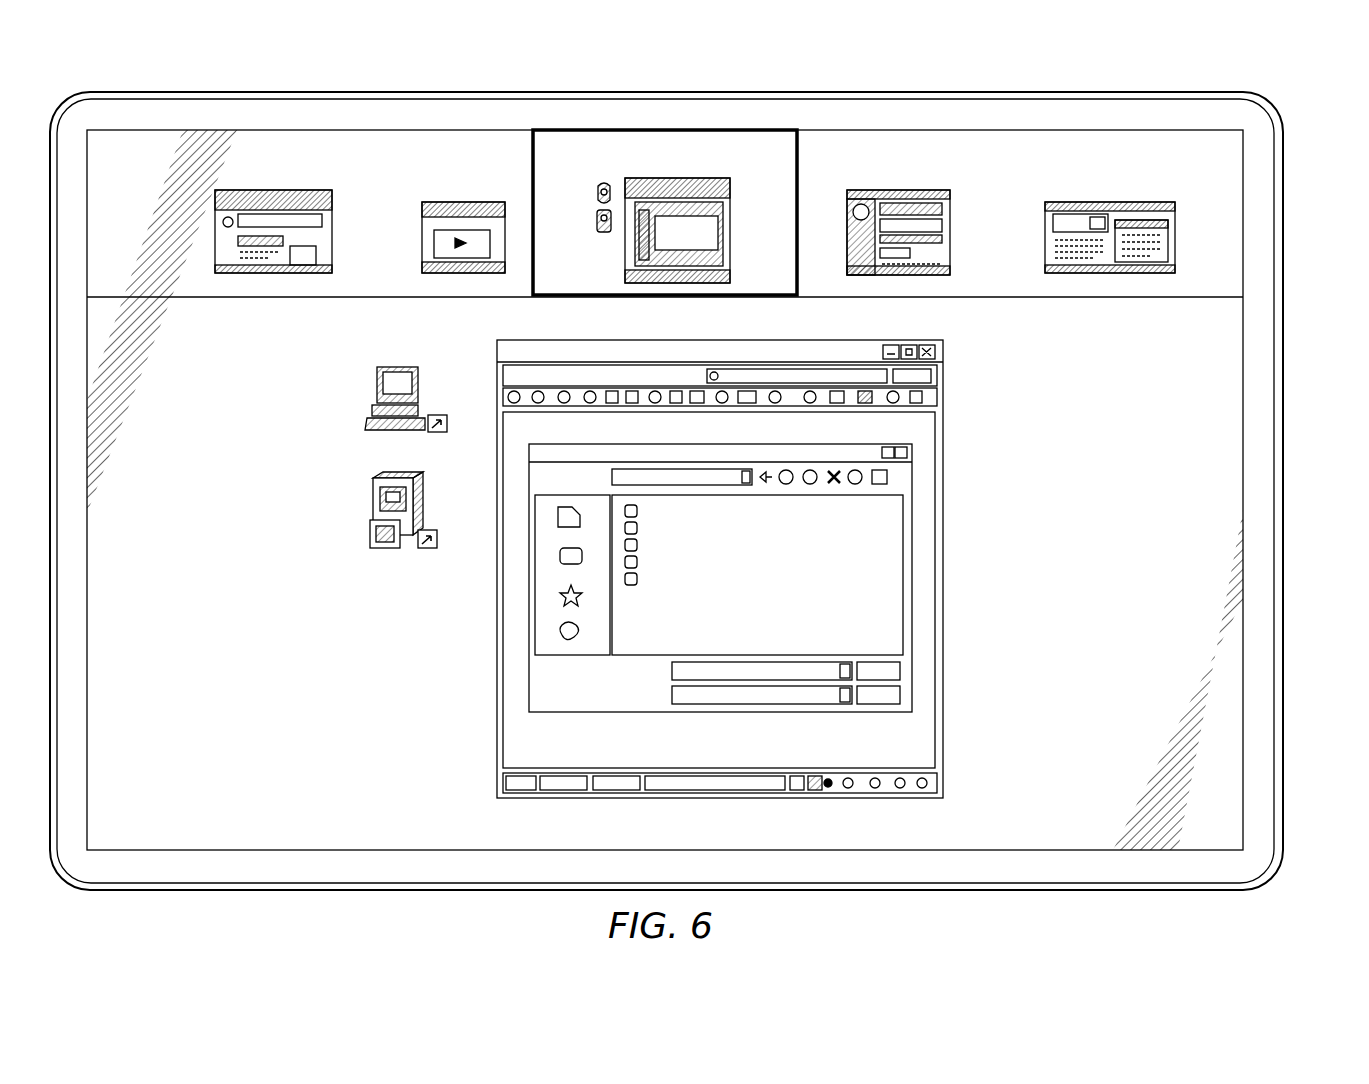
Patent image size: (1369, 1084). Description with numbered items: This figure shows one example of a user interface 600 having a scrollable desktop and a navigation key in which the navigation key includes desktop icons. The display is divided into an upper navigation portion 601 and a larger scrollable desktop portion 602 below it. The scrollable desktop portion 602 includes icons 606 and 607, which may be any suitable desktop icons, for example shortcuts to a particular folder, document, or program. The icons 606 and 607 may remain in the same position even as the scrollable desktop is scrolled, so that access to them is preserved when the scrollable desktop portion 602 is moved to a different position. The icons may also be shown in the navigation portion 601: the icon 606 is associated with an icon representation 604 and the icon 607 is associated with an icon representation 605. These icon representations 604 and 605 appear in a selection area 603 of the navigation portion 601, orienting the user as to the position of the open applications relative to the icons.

The display screen 600 is at (1293, 353).
The navigation portion 601 is at (1225, 214).
The scrollable desktop portion 602 is at (1225, 770).
The selection area 603 is at (800, 175).
The icon representation 604 is at (598, 183).
The icon representation 605 is at (603, 233).
The icon 606 is at (374, 389).
The icon 607 is at (374, 504).